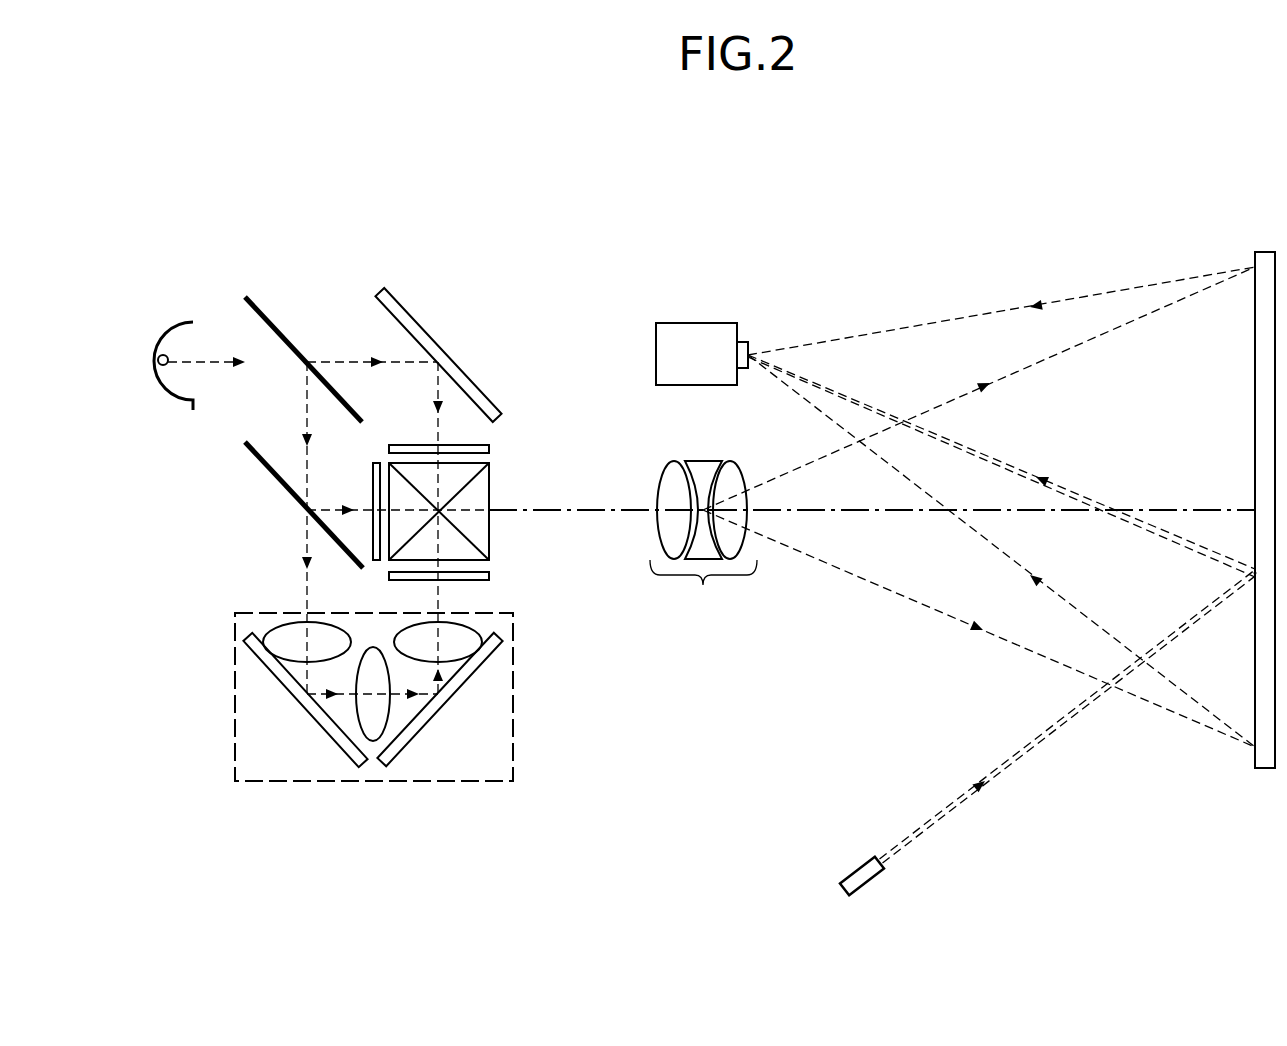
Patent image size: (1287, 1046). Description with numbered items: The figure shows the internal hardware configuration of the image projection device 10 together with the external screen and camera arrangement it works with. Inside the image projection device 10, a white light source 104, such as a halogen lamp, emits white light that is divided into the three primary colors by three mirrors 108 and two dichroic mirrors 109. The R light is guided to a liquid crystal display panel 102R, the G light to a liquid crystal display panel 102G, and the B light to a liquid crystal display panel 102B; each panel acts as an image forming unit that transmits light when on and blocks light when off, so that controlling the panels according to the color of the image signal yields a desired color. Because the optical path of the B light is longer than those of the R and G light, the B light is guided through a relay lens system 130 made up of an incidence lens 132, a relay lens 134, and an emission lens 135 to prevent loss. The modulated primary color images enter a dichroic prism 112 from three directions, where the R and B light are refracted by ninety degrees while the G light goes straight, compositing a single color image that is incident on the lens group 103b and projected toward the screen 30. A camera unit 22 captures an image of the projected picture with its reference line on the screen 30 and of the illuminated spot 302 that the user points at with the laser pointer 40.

The image projection device 10 is at (254, 204).
The camera unit 22 is at (697, 323).
The screen 30 is at (1255, 757).
The laser pointer 40 is at (855, 868).
The liquid crystal display panel 102R is at (402, 445).
The liquid crystal display panel 102G is at (373, 482).
The liquid crystal display panel 102B is at (477, 580).
The lens group 103b is at (703, 539).
The white light source 104 is at (162, 354).
The mirror 108 is at (421, 328).
The dichroic mirror 109 is at (273, 325).
The dichroic prism 112 is at (489, 480).
The relay lens system 130 is at (235, 697).
The incidence lens 132 is at (283, 622).
The relay lens 134 is at (373, 742).
The emission lens 135 is at (480, 628).
The illuminated spot 302 is at (1255, 573).